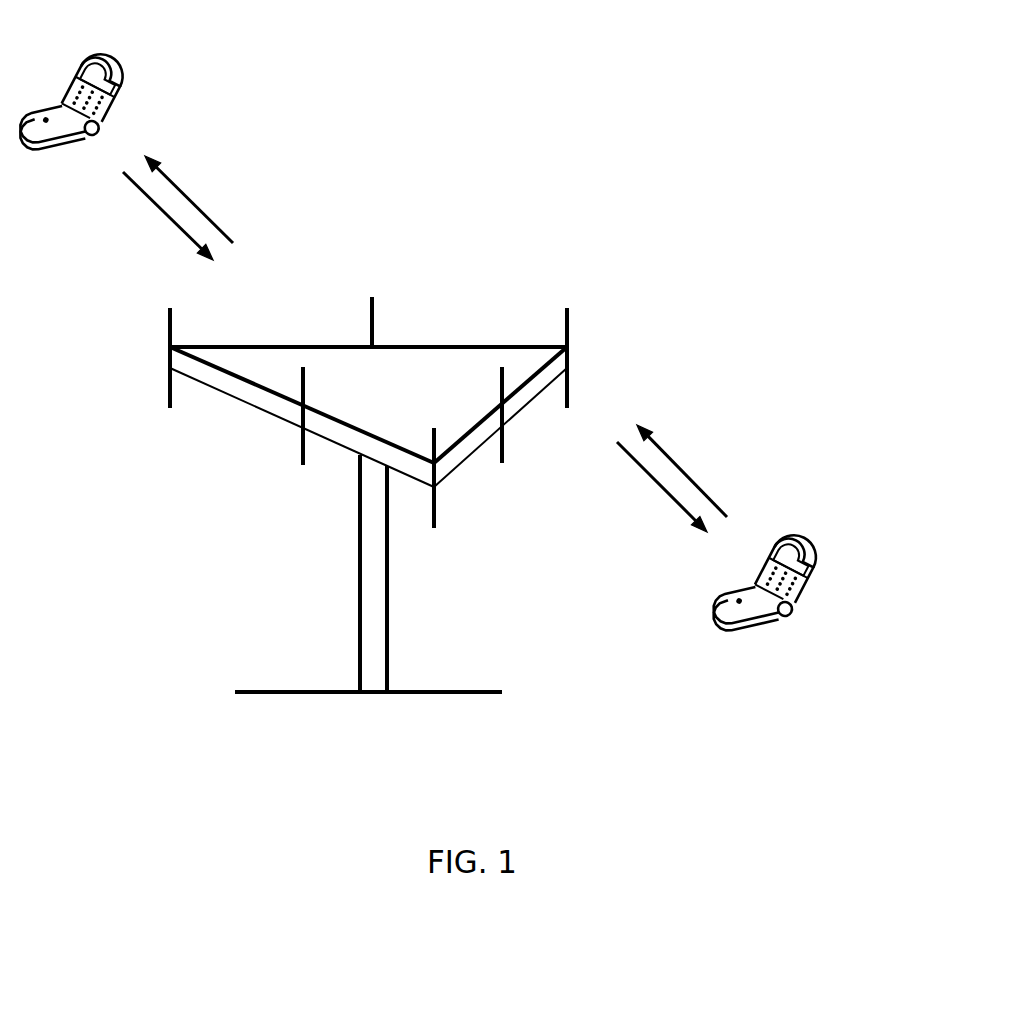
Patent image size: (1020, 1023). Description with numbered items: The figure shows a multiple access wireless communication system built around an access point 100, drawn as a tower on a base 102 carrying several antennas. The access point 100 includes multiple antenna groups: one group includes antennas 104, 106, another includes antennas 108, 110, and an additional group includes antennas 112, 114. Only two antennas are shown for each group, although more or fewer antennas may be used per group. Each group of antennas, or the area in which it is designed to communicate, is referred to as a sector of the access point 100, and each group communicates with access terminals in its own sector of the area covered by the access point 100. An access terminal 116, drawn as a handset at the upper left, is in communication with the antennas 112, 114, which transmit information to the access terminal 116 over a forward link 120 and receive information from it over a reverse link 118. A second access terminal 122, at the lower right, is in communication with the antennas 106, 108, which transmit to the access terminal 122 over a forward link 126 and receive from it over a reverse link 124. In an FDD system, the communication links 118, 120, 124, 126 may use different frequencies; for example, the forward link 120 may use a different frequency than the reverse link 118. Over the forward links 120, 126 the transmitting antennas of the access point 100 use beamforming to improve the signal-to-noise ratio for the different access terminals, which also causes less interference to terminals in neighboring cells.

The access point 100 is at (684, 62).
The base station 102 is at (372, 694).
The antenna 104 is at (567, 312).
The antenna 106 is at (502, 461).
The antenna 108 is at (434, 526).
The antenna 110 is at (303, 463).
The antenna 112 is at (170, 312).
The antenna 114 is at (372, 299).
The access terminal 116 is at (108, 63).
The reverse link 118 is at (188, 197).
The forward link 120 is at (167, 218).
The access terminal 122 is at (803, 545).
The reverse link 124 is at (662, 493).
The forward link 126 is at (685, 468).